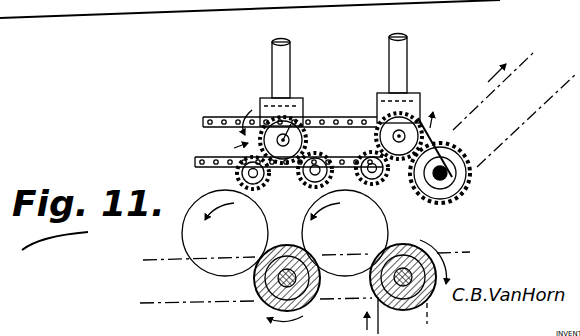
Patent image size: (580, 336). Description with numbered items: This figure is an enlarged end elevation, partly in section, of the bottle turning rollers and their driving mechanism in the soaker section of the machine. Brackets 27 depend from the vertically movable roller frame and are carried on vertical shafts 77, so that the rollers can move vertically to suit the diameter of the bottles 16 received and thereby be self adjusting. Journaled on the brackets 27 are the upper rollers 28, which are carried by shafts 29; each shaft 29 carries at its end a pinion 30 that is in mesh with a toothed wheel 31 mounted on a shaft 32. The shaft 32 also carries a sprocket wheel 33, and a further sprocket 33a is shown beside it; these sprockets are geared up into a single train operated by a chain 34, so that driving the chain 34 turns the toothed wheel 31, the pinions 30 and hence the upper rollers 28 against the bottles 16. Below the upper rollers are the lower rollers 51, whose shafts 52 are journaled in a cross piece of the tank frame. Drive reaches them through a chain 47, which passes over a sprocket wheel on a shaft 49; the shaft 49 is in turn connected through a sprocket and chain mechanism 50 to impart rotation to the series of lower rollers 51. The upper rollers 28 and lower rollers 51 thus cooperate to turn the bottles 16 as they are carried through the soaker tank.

The vertical shaft 77 is at (424, 42).
The shaft 32 is at (272, 112).
The toothed wheel 31 is at (318, 130).
The bracket 27 is at (360, 141).
The sprocket wheel 33 is at (430, 116).
The gear 33a is at (473, 167).
The chain 34 is at (537, 112).
The upper roller 28 is at (236, 176).
The shaft 29 is at (305, 181).
The pinion 30 is at (285, 233).
The bottle 16 is at (256, 234).
The lower roller 51 is at (410, 238).
The shaft 49 is at (432, 261).
The shaft 52 is at (268, 285).
The sprocket and chain mechanism 50 is at (202, 305).
The chain 47 is at (423, 318).